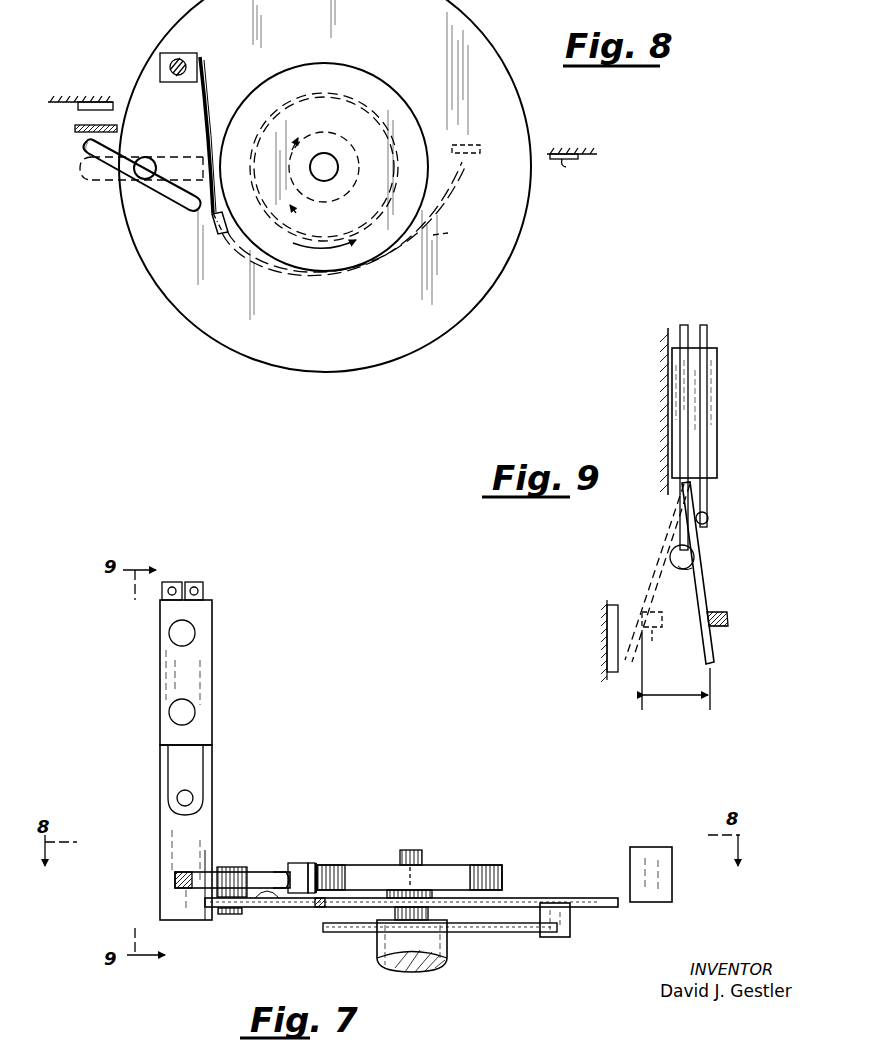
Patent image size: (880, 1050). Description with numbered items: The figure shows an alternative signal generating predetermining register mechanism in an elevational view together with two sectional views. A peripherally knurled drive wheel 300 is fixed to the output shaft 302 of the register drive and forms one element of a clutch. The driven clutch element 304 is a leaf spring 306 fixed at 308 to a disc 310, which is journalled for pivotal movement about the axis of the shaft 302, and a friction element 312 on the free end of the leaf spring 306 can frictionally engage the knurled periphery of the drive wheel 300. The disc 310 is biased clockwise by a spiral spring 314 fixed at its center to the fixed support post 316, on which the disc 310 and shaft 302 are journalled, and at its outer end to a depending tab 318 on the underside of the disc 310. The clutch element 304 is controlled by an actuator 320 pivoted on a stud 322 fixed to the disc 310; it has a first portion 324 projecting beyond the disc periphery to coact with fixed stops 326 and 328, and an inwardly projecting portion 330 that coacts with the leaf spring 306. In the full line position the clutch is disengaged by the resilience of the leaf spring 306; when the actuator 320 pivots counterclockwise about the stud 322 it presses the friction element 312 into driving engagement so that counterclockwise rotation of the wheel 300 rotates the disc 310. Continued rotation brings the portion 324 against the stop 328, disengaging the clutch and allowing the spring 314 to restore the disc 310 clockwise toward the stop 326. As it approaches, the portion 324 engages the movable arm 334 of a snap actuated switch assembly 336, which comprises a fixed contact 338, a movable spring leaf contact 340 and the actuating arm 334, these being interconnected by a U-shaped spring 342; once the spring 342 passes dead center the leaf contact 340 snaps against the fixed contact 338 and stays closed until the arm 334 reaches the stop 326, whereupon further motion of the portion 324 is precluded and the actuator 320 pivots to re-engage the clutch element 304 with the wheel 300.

In FIG. 8, the drive wheel 300 is at (354, 78).
In FIG. 7, the drive wheel 300 is at (480, 865).
In FIG. 8, the output shaft 302 is at (328, 154).
In FIG. 7, the output shaft 302 is at (407, 855).
In FIG. 8, the driven clutch element 304 is at (207, 110).
In FIG. 7, the driven clutch element 304 is at (299, 854).
In FIG. 8, the leaf spring 306 is at (200, 107).
In FIG. 7, the leaf spring 306 is at (310, 860).
In FIG. 8, the fixing point 308 is at (176, 54).
In FIG. 7, the fixing point 308 is at (267, 907).
In FIG. 8, the disc 310 is at (360, 316).
In FIG. 7, the disc 310 is at (411, 915).
In FIG. 8, the friction element 312 is at (215, 230).
In FIG. 7, the friction element 312 is at (318, 904).
In FIG. 8, the spiral spring 314 is at (450, 235).
In FIG. 7, the spiral spring 314 is at (497, 932).
In FIG. 8, the fixed support post 316 is at (290, 150).
In FIG. 7, the fixed support post 316 is at (377, 943).
In FIG. 8, the depending tab 318 is at (472, 155).
In FIG. 7, the depending tab 318 is at (572, 925).
In FIG. 8, the actuator 320 is at (146, 191).
In FIG. 9, the actuator 320 is at (718, 628).
In FIG. 7, the actuator 320 is at (252, 868).
In FIG. 8, the pivot stud 322 is at (149, 163).
In FIG. 7, the pivot stud 322 is at (240, 860).
In FIG. 8, the first portion 324 is at (92, 142).
In FIG. 9, the first portion 324 is at (730, 617).
In FIG. 7, the first portion 324 is at (188, 870).
In FIG. 8, the fixed stop 326 is at (106, 100).
In FIG. 9, the fixed stop 326 is at (606, 643).
In FIG. 8, the fixed stop 328 is at (565, 152).
In FIG. 7, the fixed stop 328 is at (633, 882).
In FIG. 8, the inwardly projecting portion 330 is at (177, 188).
In FIG. 7, the inwardly projecting portion 330 is at (278, 860).
In FIG. 8, the movable arm 334 is at (74, 128).
In FIG. 9, the movable arm 334 is at (702, 596).
In FIG. 7, the movable arm 334 is at (213, 833).
In FIG. 9, the snap actuated switch assembly 336 is at (724, 438).
In FIG. 7, the snap actuated switch assembly 336 is at (218, 690).
In FIG. 9, the fixed contact 338 is at (710, 516).
In FIG. 7, the fixed contact 338 is at (200, 792).
In FIG. 9, the movable spring leaf contact 340 is at (680, 538).
In FIG. 9, the U-shaped spring 342 is at (674, 563).